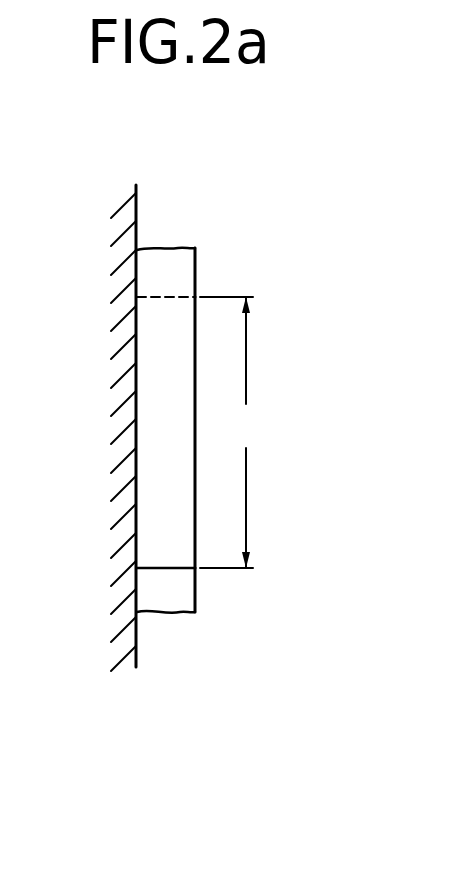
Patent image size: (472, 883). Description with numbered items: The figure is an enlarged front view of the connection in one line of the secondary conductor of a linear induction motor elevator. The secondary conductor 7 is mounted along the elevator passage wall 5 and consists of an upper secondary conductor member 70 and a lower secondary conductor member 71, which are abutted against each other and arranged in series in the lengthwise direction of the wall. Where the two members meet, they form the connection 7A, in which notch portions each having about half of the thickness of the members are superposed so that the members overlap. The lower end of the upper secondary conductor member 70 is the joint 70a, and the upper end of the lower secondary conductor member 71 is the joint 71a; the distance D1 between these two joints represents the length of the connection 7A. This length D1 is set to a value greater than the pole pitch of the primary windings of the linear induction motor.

The elevator passage wall 5 is at (122, 266).
The secondary conductor 7 is at (174, 244).
The upper secondary conductor member 70 is at (186, 291).
The lower end (joint) of the upper secondary conductor member 70a is at (160, 568).
The lower secondary conductor member 71 is at (187, 590).
The upper end (joint) of the lower secondary conductor member 71a is at (137, 297).
The connection 7A is at (150, 460).
The distance D1 is at (235, 432).